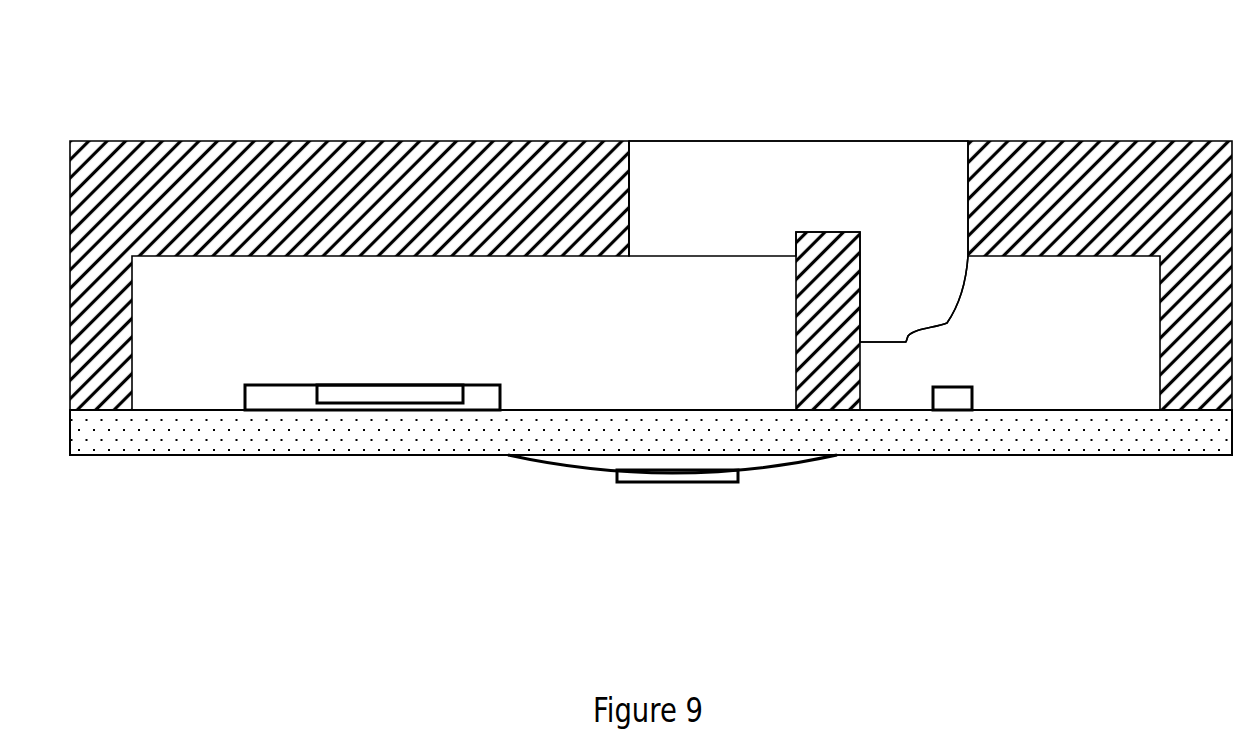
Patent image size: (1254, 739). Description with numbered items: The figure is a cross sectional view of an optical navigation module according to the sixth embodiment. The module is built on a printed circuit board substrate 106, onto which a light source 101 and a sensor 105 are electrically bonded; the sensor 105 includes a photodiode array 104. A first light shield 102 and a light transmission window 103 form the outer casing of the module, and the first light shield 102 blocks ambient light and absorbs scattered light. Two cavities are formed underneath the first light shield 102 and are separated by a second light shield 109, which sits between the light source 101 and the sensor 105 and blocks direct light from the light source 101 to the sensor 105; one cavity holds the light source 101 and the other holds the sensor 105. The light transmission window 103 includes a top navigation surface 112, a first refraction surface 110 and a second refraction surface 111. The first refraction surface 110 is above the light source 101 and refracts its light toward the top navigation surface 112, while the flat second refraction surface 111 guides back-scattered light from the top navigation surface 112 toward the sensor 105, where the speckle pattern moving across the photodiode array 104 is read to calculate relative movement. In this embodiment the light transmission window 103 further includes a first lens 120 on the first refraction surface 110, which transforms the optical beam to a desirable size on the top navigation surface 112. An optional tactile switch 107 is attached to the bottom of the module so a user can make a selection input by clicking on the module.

The light source 101 is at (974, 401).
The first light shield 102 is at (460, 172).
The light transmission window 103 is at (734, 182).
The photodiode array 104 is at (333, 385).
The sensor 105 is at (278, 392).
The printed circuit board substrate 106 is at (480, 427).
The tactile switch 107 is at (742, 478).
The second light shield 109 is at (823, 245).
The first refraction surface 110 is at (906, 340).
The second refraction surface 111 is at (655, 250).
The top navigation surface 112 is at (782, 140).
The first lens 120 is at (940, 320).